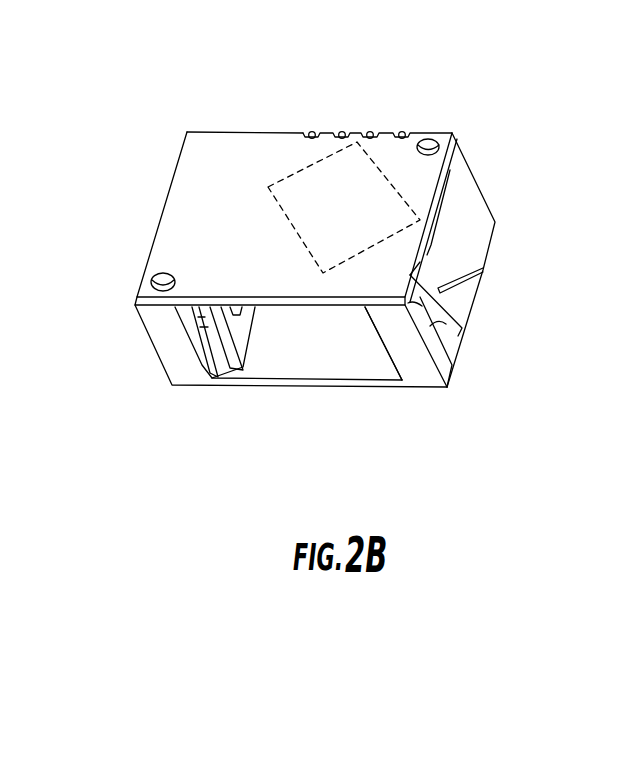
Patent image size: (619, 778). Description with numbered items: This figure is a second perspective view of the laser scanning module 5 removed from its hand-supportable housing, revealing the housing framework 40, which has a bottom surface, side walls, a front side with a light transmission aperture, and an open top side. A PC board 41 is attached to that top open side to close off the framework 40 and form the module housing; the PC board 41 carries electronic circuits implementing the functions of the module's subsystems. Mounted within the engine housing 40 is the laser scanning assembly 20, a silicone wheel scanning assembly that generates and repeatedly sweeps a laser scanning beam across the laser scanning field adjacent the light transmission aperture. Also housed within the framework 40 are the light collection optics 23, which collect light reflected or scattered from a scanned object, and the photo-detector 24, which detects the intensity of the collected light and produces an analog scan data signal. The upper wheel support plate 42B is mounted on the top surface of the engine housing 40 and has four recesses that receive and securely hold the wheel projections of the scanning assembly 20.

The laser scanning module 5 is at (150, 413).
The laser scanning assembly 20 is at (306, 338).
The light collection optics 23 is at (243, 337).
The photo-detector 24 is at (377, 337).
The housing framework 40 is at (477, 215).
The PC board 41 is at (260, 143).
The upper wheel support plate 42B is at (362, 160).